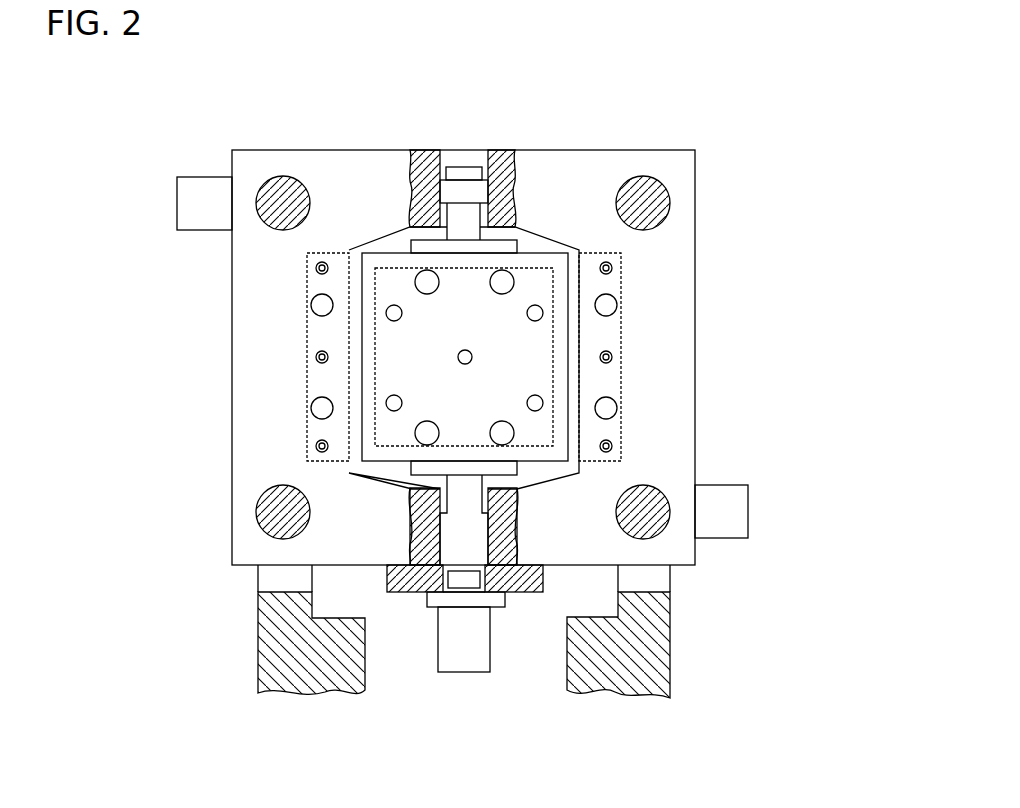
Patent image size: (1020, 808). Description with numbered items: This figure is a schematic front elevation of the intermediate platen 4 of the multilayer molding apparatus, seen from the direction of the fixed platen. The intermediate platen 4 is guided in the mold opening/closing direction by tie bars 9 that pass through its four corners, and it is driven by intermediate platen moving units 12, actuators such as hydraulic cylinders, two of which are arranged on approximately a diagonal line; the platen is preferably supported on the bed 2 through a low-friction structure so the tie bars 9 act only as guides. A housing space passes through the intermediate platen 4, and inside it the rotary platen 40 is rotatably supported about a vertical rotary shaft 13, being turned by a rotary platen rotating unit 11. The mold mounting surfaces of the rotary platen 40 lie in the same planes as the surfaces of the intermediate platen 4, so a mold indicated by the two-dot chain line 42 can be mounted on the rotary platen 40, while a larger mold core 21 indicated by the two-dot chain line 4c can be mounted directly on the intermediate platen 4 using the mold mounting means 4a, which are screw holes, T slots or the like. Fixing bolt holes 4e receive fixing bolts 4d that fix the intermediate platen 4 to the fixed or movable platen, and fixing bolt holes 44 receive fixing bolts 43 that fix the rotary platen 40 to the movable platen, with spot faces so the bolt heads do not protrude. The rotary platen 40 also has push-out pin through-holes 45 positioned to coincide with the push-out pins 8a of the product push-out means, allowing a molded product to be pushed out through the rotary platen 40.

The bed 2 is at (670, 660).
The intermediate platen 4 is at (630, 150).
The mold mounting means 4a is at (321, 262).
The two-dot chain line 4c is at (540, 357).
The fixing bolts 4d is at (311, 305).
The fixing bolt holes 4e is at (464, 358).
The push-out pins 8a is at (344, 366).
The tie bars 9 is at (670, 203).
The rotary platen rotating unit 11 is at (462, 672).
The intermediate platen moving units 12 is at (203, 177).
The rotary shaft 13 is at (462, 167).
The mold core 21 is at (621, 330).
The rotary platen 40 is at (527, 253).
The two-dot chain line 42 is at (546, 268).
The fixing bolts 43 is at (461, 255).
The fixing bolt holes 44 is at (417, 281).
The push-out pin through-holes 45 is at (388, 398).